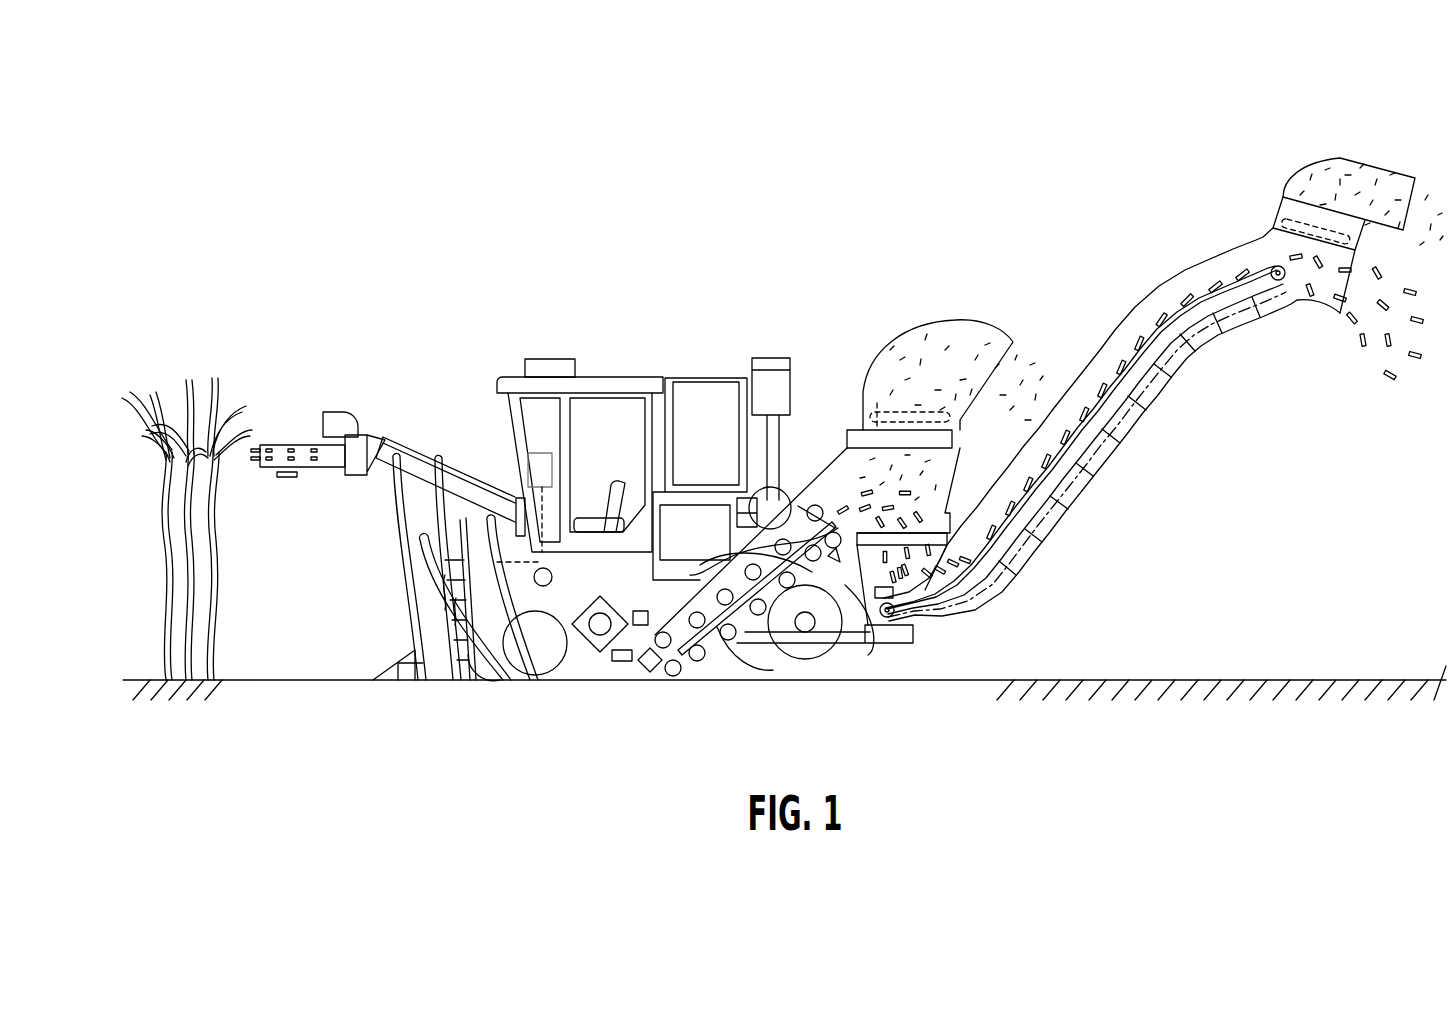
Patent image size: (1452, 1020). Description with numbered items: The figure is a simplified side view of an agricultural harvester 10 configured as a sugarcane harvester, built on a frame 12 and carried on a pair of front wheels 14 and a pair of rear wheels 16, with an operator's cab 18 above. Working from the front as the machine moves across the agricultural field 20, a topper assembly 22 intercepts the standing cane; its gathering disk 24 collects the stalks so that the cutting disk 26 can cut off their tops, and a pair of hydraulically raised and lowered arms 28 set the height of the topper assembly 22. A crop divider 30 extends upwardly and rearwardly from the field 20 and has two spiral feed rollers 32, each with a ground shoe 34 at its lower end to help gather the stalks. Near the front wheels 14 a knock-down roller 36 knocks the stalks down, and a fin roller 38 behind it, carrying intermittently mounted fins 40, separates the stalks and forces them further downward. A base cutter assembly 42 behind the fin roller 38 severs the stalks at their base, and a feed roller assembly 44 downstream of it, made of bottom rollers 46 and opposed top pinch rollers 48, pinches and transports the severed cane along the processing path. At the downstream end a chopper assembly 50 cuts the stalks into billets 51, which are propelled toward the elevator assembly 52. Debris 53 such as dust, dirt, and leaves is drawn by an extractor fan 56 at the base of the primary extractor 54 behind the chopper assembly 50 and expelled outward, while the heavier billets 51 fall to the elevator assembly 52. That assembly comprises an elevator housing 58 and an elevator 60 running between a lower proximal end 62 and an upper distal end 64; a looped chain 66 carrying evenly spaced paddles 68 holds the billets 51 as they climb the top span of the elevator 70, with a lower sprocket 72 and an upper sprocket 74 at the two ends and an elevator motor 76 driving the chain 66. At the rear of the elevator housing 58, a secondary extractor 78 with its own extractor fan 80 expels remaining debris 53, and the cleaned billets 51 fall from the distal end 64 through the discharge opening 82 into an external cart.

The agricultural harvester 10 is at (418, 283).
The frame 12 is at (620, 597).
The front wheels 14 is at (528, 673).
The rear wheels 16 is at (820, 667).
The operator's cab 18 is at (642, 378).
The agricultural field 20 is at (288, 684).
The topper assembly 22 is at (350, 410).
The gathering disk 24 is at (268, 441).
The cutting disk 26 is at (283, 479).
The arms 28 is at (488, 490).
The crop divider 30 is at (405, 645).
The spiral feed rollers 32 is at (415, 678).
The ground shoe 34 is at (393, 682).
The knock-down roller 36 is at (552, 579).
The fin roller 38 is at (598, 634).
The fins 40 is at (583, 630).
The base cutter assembly 42 is at (643, 685).
The feed roller assembly 44 is at (718, 653).
The bottom rollers 46 is at (673, 677).
The top pinch rollers 48 is at (748, 566).
The chopper assembly 50 is at (830, 497).
The billets 51 is at (920, 492).
The elevator assembly 52 is at (1100, 477).
The debris 53 is at (960, 340).
The primary extractor 54 is at (877, 337).
The extractor fan 56 is at (877, 403).
The elevator housing 58 is at (1125, 438).
The elevator 60 is at (1122, 382).
The proximal end 62 is at (920, 622).
The distal end 64 is at (1274, 248).
The chain 66 is at (1157, 400).
The paddles 68 is at (1153, 334).
The top span of the elevator 70 is at (1065, 410).
The lower sprocket 72 is at (888, 620).
The upper sprocket 74 is at (1245, 272).
The elevator motor 76 is at (1262, 262).
The secondary extractor 78 is at (1330, 160).
The extractor fan 80 is at (1293, 200).
The discharge opening 82 is at (1300, 300).